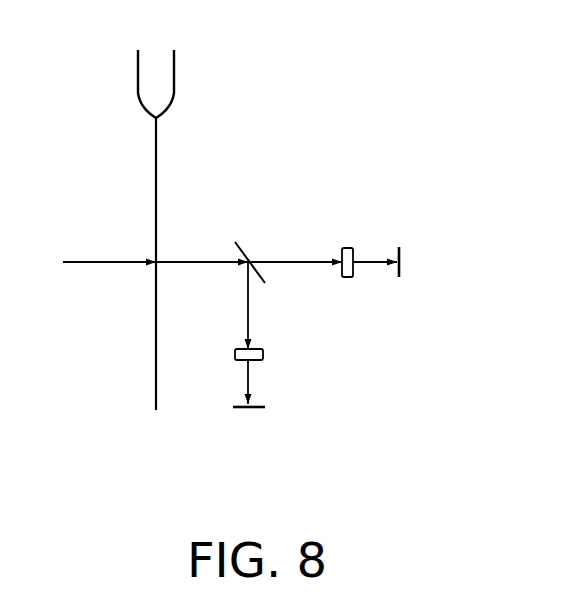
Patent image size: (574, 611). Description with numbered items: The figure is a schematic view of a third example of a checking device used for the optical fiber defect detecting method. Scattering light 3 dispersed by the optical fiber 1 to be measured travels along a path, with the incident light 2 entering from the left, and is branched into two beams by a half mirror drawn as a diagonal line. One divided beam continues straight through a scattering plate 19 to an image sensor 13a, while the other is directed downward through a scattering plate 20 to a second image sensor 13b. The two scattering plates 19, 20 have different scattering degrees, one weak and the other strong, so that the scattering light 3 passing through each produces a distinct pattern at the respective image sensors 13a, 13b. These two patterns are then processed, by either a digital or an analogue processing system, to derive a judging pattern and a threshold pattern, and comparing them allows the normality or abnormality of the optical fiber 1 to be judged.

The optical fiber 1 is at (156, 162).
The incident light beam 2 is at (95, 262).
The scattering light 3 is at (188, 262).
The scattering plate 19 is at (350, 247).
The scattering plate 20 is at (263, 354).
The image sensor 13a is at (402, 250).
The image sensor 13b is at (250, 410).